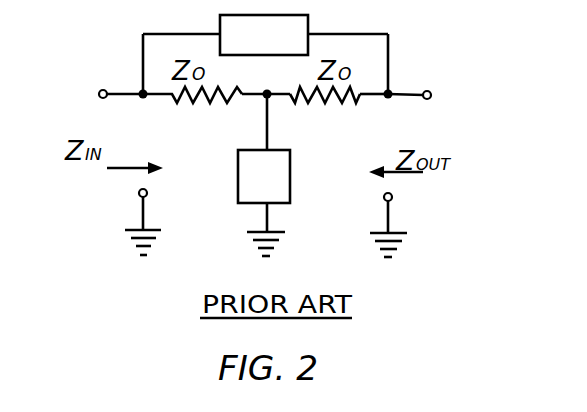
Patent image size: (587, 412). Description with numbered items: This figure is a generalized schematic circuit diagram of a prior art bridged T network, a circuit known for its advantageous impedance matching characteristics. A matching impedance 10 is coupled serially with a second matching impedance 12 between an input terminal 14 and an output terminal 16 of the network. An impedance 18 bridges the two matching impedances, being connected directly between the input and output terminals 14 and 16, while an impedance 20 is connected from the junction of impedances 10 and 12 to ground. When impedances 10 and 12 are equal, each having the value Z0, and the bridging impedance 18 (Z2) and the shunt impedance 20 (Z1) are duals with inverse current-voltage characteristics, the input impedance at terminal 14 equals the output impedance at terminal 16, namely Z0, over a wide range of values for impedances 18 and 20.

The matching impedance 10 is at (192, 104).
The matching impedance 12 is at (320, 103).
The input terminal 14 is at (103, 89).
The output terminal 16 is at (438, 66).
The impedance 18 is at (310, 22).
The impedance 20 is at (292, 182).